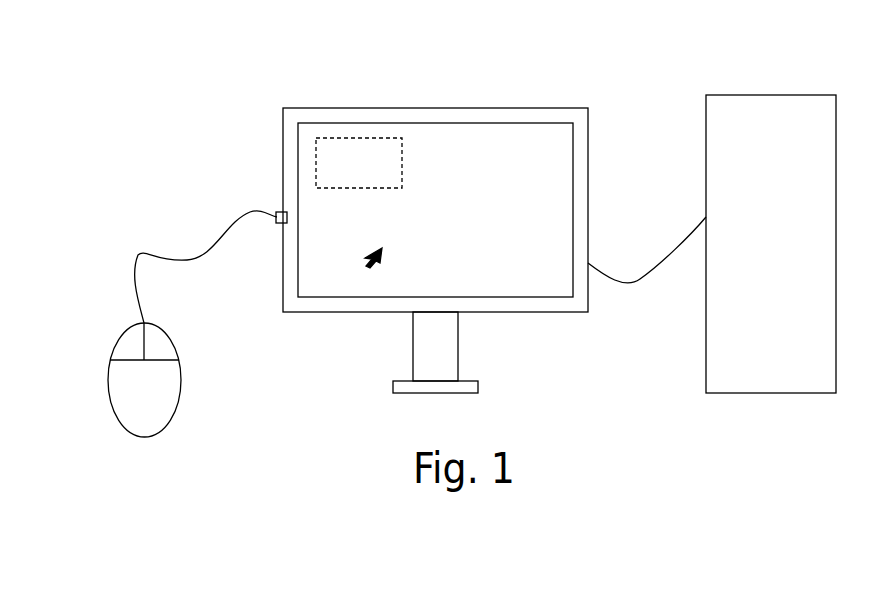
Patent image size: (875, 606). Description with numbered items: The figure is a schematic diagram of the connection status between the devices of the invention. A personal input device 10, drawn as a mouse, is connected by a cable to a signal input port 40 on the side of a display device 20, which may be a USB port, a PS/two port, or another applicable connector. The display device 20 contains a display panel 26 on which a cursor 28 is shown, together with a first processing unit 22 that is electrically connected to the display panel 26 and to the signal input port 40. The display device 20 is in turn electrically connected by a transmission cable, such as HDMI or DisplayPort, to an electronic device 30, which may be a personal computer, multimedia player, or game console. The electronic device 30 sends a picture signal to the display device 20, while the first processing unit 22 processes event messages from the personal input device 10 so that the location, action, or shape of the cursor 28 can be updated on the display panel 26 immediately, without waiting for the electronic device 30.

The personal input device 10 is at (118, 398).
The display device 20 is at (287, 127).
The first processing unit 22 is at (357, 150).
The display panel 26 is at (462, 138).
The cursor 28 is at (373, 266).
The electronic device 30 is at (770, 98).
The signal input port 40 is at (280, 212).